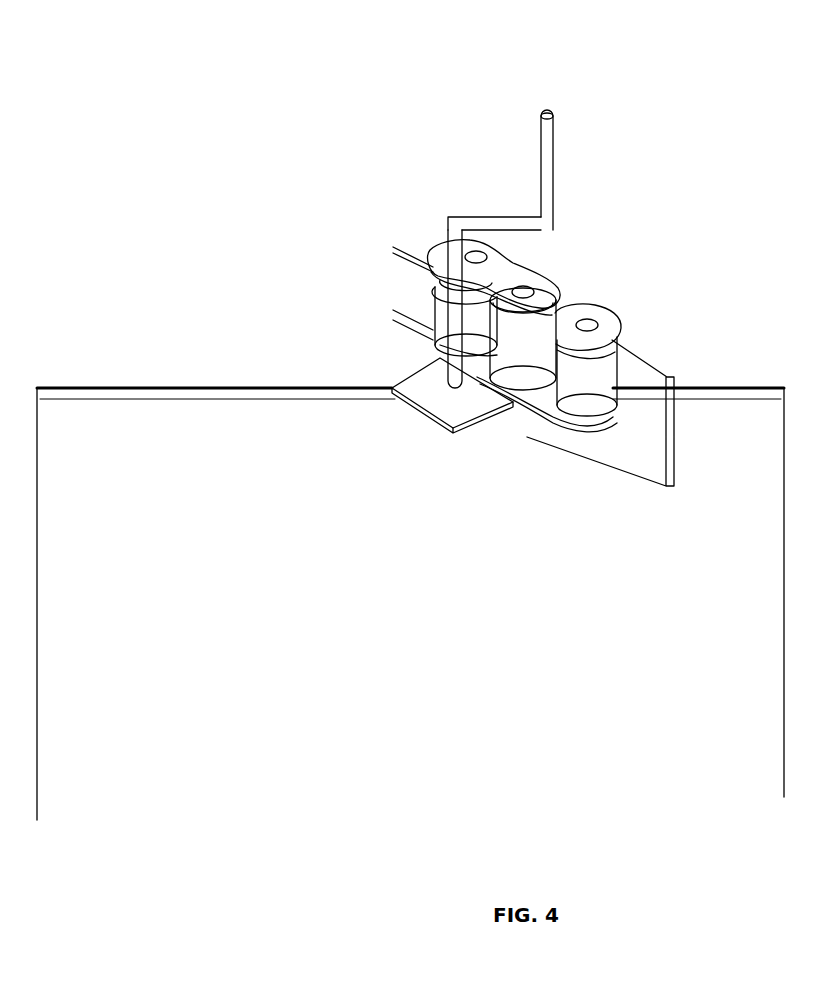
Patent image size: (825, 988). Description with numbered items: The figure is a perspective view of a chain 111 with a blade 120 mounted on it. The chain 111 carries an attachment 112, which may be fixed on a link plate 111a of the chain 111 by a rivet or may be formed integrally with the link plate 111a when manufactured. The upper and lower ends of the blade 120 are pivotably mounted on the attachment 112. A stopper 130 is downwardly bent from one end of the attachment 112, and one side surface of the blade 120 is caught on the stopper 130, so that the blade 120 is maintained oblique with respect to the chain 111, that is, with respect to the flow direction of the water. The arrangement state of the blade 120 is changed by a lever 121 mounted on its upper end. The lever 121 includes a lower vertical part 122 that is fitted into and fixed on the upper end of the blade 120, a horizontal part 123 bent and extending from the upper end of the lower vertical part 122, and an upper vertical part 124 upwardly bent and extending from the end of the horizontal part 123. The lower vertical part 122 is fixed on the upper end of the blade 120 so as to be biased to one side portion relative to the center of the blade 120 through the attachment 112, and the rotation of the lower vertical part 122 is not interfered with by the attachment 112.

The chain 111 is at (553, 273).
The link plate 111a is at (513, 413).
The attachment 112 is at (470, 423).
The blade 120 is at (104, 387).
The lever 121 is at (469, 217).
The lower vertical part 122 is at (445, 302).
The horizontal part 123 is at (503, 216).
The upper vertical part 124 is at (557, 137).
The stopper 130 is at (680, 448).